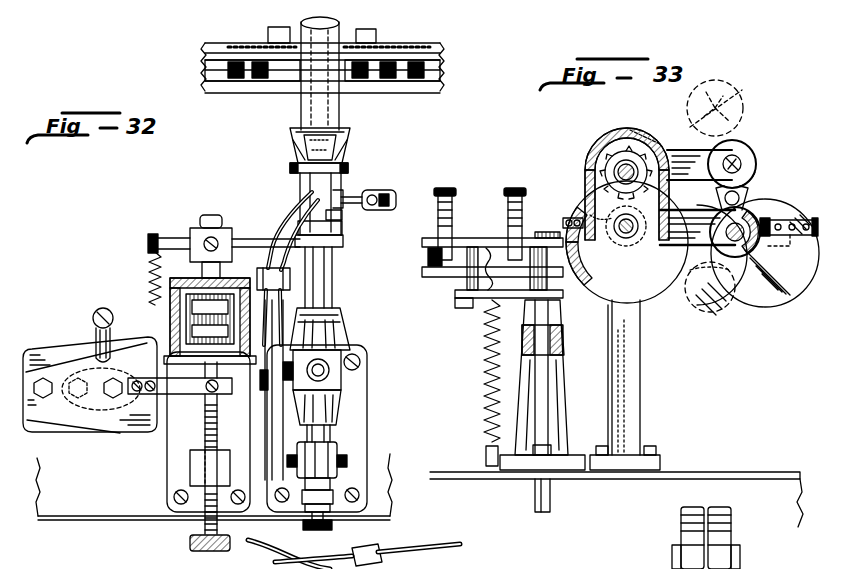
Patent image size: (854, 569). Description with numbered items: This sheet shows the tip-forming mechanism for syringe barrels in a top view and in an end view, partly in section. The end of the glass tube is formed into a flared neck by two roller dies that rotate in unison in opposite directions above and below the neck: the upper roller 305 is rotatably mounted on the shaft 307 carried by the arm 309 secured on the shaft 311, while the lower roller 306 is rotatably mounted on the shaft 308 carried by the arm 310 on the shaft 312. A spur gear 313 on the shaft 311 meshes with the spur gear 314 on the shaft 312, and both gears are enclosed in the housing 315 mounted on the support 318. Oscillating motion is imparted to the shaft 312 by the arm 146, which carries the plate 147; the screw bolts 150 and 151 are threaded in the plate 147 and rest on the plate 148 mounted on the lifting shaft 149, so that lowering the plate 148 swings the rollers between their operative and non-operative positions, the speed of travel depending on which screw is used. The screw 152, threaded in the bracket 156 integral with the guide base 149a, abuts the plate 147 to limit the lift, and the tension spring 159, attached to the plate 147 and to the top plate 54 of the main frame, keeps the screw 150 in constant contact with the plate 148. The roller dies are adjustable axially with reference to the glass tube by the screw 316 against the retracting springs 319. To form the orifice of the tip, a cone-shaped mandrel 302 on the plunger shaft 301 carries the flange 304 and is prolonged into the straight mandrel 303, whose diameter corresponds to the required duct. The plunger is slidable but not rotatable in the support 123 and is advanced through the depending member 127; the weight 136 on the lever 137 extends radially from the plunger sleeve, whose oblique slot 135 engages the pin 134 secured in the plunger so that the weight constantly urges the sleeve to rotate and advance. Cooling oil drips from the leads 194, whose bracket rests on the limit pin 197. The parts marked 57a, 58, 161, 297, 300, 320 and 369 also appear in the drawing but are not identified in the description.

In FIG. 32, the top plate 54 is at (120, 512).
In FIG. 33, the top plate 54 is at (722, 472).
In FIG. 32, the chain wheel 57a is at (336, 60).
In FIG. 33, the chain wheel 57a is at (790, 310).
In FIG. 32, the chain rail 58 is at (388, 84).
In FIG. 33, the chain rail 58 is at (808, 205).
In FIG. 32, the support 123 is at (360, 368).
In FIG. 32, the depending member 127 is at (348, 440).
In FIG. 32, the pin 134 is at (340, 232).
In FIG. 32, the oblique slot 135 is at (340, 220).
In FIG. 32, the weight 136 is at (364, 192).
In FIG. 32, the lever 137 is at (341, 210).
In FIG. 33, the arm 146 is at (566, 228).
In FIG. 32, the plate 147 is at (135, 432).
In FIG. 33, the plate 147 is at (488, 236).
In FIG. 32, the plate 148 is at (72, 433).
In FIG. 33, the plate 148 is at (428, 254).
In FIG. 33, the lifting shaft 149 is at (552, 494).
In FIG. 33, the guide base 149a is at (562, 372).
In FIG. 33, the screw bolt 150 is at (452, 220).
In FIG. 33, the screw bolt 151 is at (508, 212).
In FIG. 33, the screw 152 is at (462, 282).
In FIG. 32, the bracket 156 is at (108, 410).
In FIG. 33, the bracket 156 is at (455, 300).
In FIG. 32, the tension spring 159 is at (93, 318).
In FIG. 33, the tension spring 159 is at (486, 388).
In FIG. 33, the gear stack 161 is at (681, 516).
In FIG. 32, the leads 194 is at (300, 200).
In FIG. 32, the limit pin 197 is at (295, 450).
In FIG. 32, the rail 297 is at (442, 86).
In FIG. 33, the rail 297 is at (772, 238).
In FIG. 32, the hose 300 is at (447, 562).
In FIG. 32, the plunger shaft 301 is at (333, 283).
In FIG. 32, the cone-shaped mandrel 302 is at (308, 150).
In FIG. 32, the straight mandrel 303 is at (312, 114).
In FIG. 32, the flange 304 is at (290, 167).
In FIG. 33, the upper roller 305 is at (752, 150).
In FIG. 32, the lower roller 306 is at (340, 148).
In FIG. 33, the lower roller 306 is at (745, 258).
In FIG. 32, the shaft 307 is at (288, 208).
In FIG. 33, the shaft 307 is at (752, 178).
In FIG. 33, the shaft 308 is at (705, 268).
In FIG. 33, the arm 309 is at (715, 146).
In FIG. 33, the arm 310 is at (710, 252).
In FIG. 32, the shaft 311 is at (212, 215).
In FIG. 33, the shaft 311 is at (614, 172).
In FIG. 33, the shaft 312 is at (590, 215).
In FIG. 32, the spur gear 313 is at (170, 302).
In FIG. 33, the spur gear 313 is at (592, 132).
In FIG. 33, the spur gear 314 is at (627, 242).
In FIG. 33, the housing 315 is at (660, 135).
In FIG. 32, the screw 316 is at (216, 551).
In FIG. 32, the support 318 is at (190, 466).
In FIG. 33, the support 318 is at (644, 375).
In FIG. 32, the retracting springs 319 is at (152, 272).
In FIG. 33, the roller 320 is at (716, 196).
In FIG. 32, the hose clamp 369 is at (258, 267).